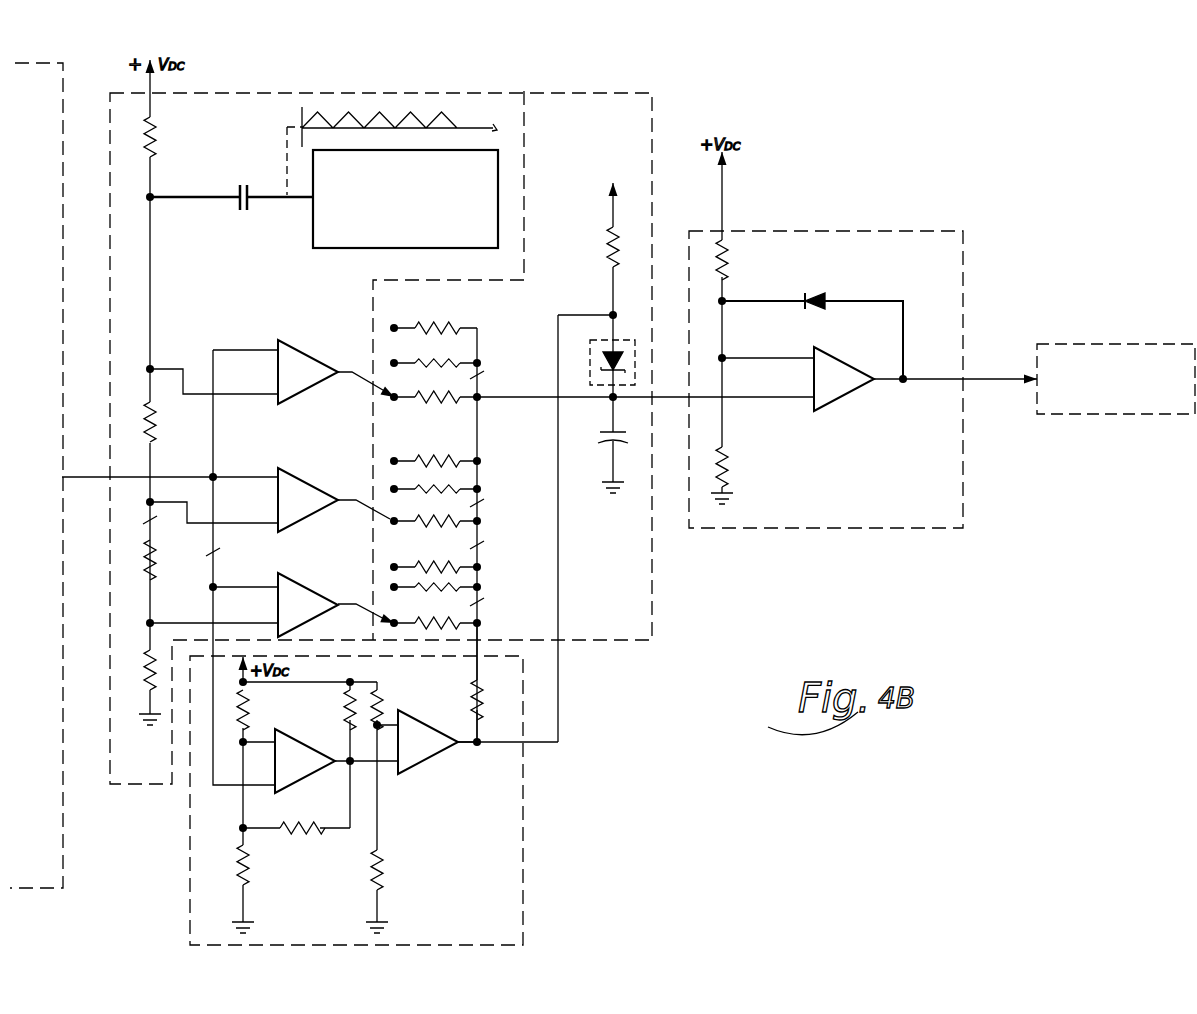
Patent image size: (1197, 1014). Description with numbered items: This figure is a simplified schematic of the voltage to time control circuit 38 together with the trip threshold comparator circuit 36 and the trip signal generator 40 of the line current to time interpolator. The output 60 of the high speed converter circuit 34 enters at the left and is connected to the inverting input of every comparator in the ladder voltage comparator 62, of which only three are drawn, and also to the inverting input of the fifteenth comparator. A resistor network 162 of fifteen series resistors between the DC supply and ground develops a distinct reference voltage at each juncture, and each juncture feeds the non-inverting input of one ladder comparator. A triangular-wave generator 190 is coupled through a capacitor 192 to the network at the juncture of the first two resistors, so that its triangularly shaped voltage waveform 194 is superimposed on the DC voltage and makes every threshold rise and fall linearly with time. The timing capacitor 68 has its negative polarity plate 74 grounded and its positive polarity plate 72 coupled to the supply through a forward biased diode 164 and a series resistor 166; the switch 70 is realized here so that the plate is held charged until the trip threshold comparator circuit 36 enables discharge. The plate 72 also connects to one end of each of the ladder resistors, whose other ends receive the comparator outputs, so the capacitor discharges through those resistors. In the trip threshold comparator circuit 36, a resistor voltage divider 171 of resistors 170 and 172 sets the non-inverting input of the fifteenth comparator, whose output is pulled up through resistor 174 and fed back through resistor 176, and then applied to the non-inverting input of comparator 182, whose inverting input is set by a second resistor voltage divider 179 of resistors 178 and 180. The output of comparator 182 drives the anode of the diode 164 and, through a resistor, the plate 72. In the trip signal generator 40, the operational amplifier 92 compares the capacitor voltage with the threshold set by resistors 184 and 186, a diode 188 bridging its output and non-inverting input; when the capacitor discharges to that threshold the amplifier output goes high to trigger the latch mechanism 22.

The latch mechanism 22 is at (1132, 410).
The high speed converter circuit 34 is at (45, 887).
The trip threshold comparator circuit 36 is at (345, 948).
The voltage to time control circuit 38 is at (168, 790).
The trip signal generator 40 is at (876, 522).
The output of the high speed converter circuit 60 is at (96, 477).
The ladder voltage comparator 62 is at (273, 346).
The timing capacitor 68 is at (572, 445).
The switch 70 is at (631, 345).
The positive polarity plate 72 is at (607, 430).
The negative polarity plate 74 is at (612, 446).
The operational amplifier 92 is at (852, 372).
The resistor network 162 is at (163, 128).
The forward biased diode 164 is at (590, 350).
The series resistor 166 is at (607, 244).
The resistor 170 is at (250, 710).
The resistor voltage divider 171 is at (230, 812).
The resistor 172 is at (250, 876).
The resistor 174 is at (346, 706).
The resistor 176 is at (305, 832).
The resistor 178 is at (383, 700).
The second resistor voltage divider 179 is at (392, 812).
The resistor 180 is at (384, 876).
The comparator 182 is at (430, 745).
The resistor 184 is at (727, 270).
The resistor 186 is at (730, 466).
The diode 188 is at (826, 297).
The triangular-wave generator 190 is at (402, 240).
The capacitor 192 is at (240, 214).
The triangularly shaped voltage waveform 194 is at (458, 128).